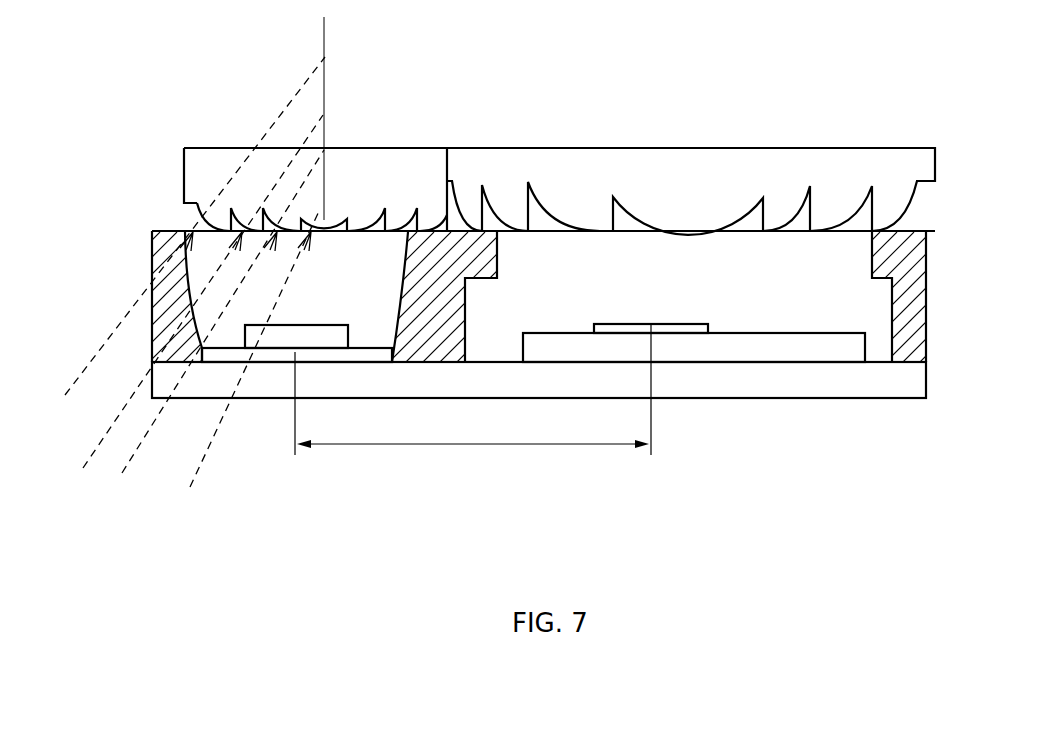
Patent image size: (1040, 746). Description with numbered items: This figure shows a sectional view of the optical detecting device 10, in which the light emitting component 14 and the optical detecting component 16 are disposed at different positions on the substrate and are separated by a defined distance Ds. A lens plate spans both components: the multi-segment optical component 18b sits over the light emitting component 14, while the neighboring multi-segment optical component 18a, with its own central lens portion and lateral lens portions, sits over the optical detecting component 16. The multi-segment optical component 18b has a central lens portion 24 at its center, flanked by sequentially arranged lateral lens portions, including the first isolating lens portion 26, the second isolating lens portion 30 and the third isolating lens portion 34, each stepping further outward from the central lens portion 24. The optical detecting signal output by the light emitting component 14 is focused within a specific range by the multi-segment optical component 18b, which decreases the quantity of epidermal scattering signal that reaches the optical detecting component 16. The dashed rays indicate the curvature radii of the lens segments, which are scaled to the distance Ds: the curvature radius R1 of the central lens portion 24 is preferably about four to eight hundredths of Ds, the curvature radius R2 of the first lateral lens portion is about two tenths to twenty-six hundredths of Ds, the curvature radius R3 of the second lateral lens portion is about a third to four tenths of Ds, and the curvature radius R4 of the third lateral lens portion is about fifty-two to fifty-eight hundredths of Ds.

The optical detecting device 10 is at (950, 306).
The light emitting component 14 is at (278, 338).
The optical detecting component 16 is at (683, 330).
The multi-segment optical component 18a is at (683, 190).
The multi-segment optical component 18b is at (140, 155).
The central lens portion 24 is at (334, 220).
The first isolating lens portion 26 is at (287, 213).
The second isolating lens portion 30 is at (250, 210).
The third isolating lens portion 34 is at (227, 210).
The curvature radius of the central lens portion R1 is at (241, 348).
The curvature radius of the first lateral lens portion R2 is at (220, 311).
The curvature radius of the second lateral lens portion R3 is at (203, 291).
The curvature radius of the third lateral lens portion R4 is at (195, 226).
The distance between the light emitting component and the optical detecting componen Ds is at (473, 390).